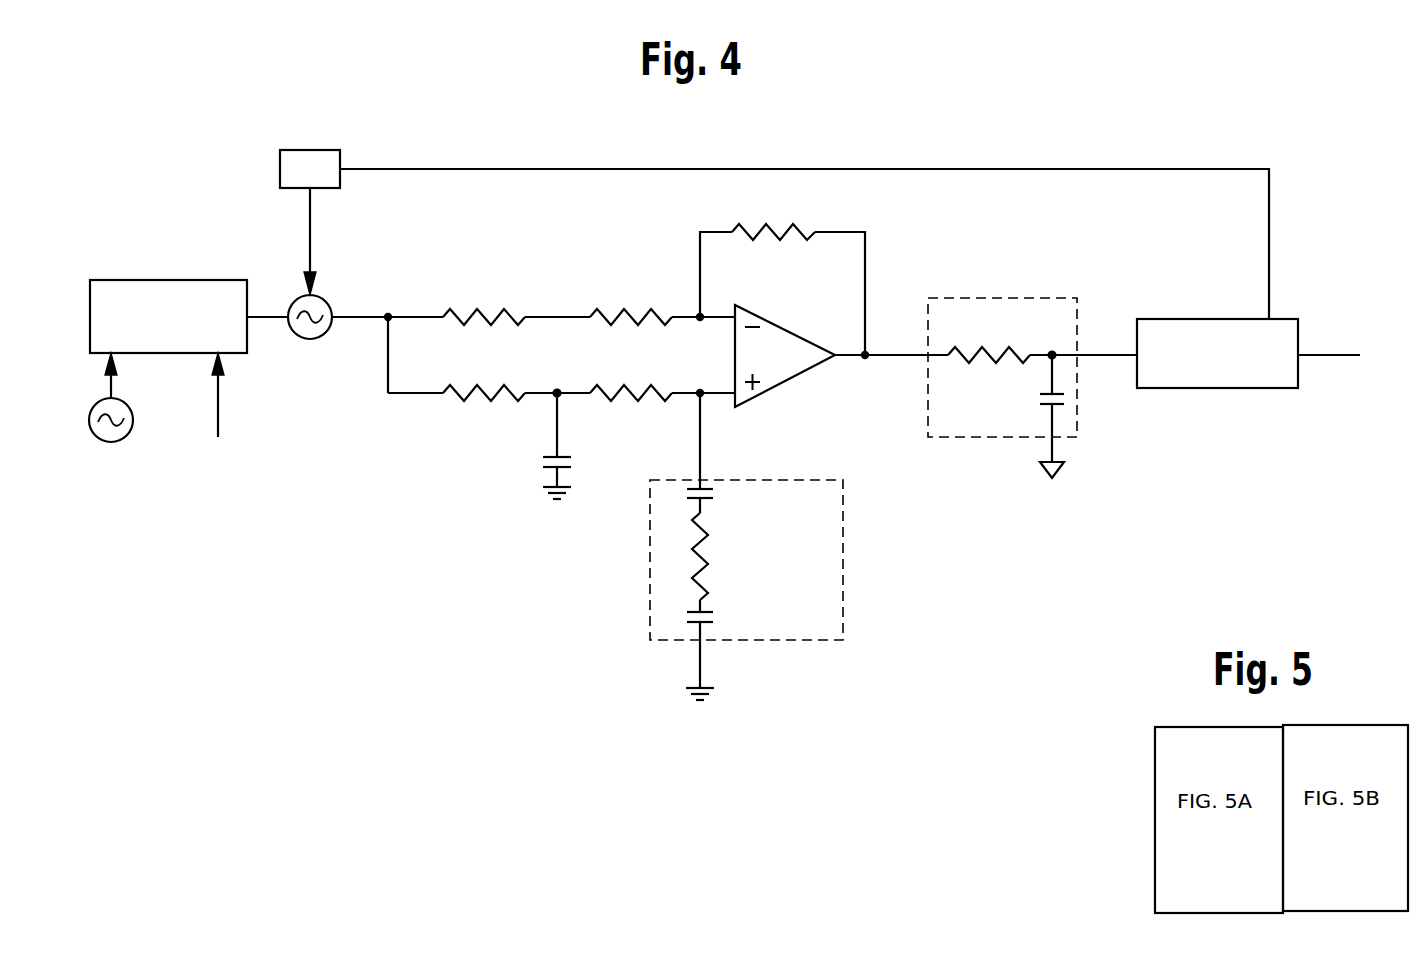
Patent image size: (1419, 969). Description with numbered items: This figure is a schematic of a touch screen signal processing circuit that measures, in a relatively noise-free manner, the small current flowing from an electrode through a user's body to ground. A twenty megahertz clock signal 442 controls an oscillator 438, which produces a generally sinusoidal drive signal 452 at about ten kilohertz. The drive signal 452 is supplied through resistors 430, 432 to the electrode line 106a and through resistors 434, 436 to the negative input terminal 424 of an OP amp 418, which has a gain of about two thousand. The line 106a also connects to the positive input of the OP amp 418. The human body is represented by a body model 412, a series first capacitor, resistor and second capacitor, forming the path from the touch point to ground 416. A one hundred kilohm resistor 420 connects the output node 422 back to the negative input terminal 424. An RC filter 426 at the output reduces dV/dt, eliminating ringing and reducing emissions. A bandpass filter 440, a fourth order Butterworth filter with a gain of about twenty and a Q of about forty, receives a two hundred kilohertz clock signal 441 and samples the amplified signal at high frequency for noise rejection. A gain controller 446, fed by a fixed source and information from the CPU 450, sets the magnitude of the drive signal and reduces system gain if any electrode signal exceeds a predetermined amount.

The clock signal 441 is at (1080, 168).
The 20 MHz clock signal 442 is at (278, 169).
The gain controller 446 is at (183, 280).
The oscillator 438 is at (328, 300).
The drive signal 452 is at (360, 312).
The resistor 434 is at (464, 322).
The resistor 436 is at (599, 322).
The resistor 430 is at (478, 400).
The resistor 432 is at (641, 400).
The negative input terminal 424 is at (706, 312).
The 100 kilohm resistor 420 is at (812, 230).
The output node 422 is at (859, 350).
The OP amp 418 is at (770, 392).
The RC filter 426 is at (985, 297).
The bandpass filter 440 is at (1290, 318).
The line 106a is at (700, 425).
The body model 412 is at (755, 640).
The ground 416 is at (690, 700).
The CPU 450 is at (222, 475).